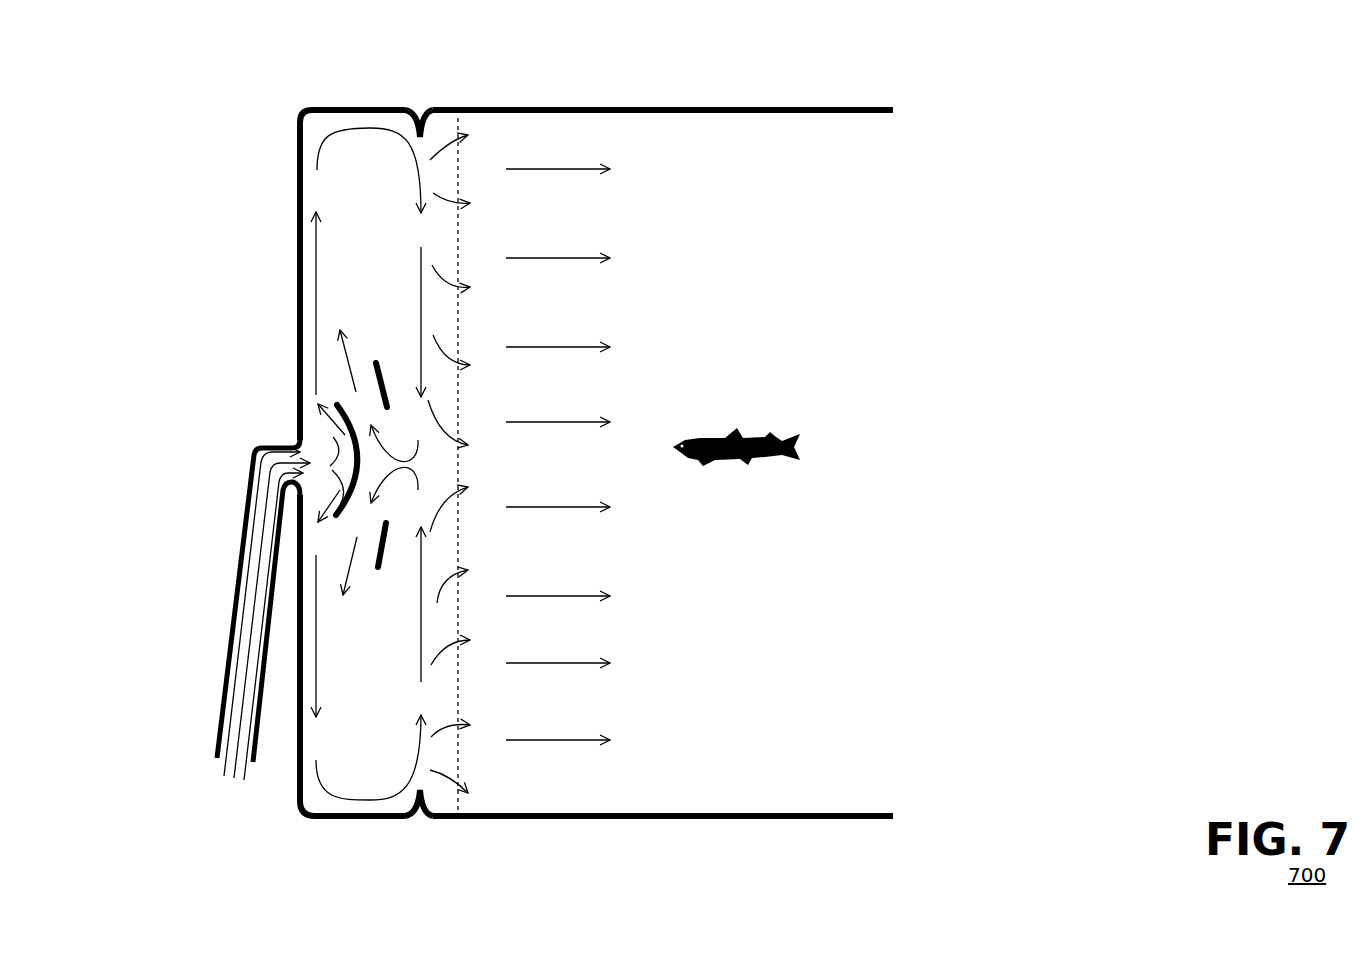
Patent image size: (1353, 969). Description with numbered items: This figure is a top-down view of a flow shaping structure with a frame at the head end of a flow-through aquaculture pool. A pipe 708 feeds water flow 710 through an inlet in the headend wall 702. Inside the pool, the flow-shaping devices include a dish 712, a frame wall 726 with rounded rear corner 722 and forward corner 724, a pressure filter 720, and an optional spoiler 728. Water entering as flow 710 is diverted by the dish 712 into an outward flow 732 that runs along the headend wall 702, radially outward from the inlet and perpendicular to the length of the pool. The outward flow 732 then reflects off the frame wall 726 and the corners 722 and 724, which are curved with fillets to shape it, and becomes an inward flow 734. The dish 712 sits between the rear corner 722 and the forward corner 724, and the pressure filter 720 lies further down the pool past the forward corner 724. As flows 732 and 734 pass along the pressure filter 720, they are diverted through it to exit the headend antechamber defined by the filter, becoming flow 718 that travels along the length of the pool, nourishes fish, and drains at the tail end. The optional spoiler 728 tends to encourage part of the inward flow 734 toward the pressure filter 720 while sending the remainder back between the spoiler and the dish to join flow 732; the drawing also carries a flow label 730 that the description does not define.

The headend wall 702 is at (298, 292).
The pipe 708 is at (234, 610).
The water flow 710 is at (233, 768).
The dish 712 is at (352, 440).
The flow 718 is at (562, 663).
The pressure filter 720 is at (458, 760).
The rear corner 722 is at (300, 116).
The forward corner 724 is at (424, 134).
The frame wall 726 is at (381, 110).
The spoiler 728 is at (375, 378).
The downward flow 730 is at (318, 677).
The outward flow 732 is at (338, 797).
The inward flow 734 is at (421, 655).